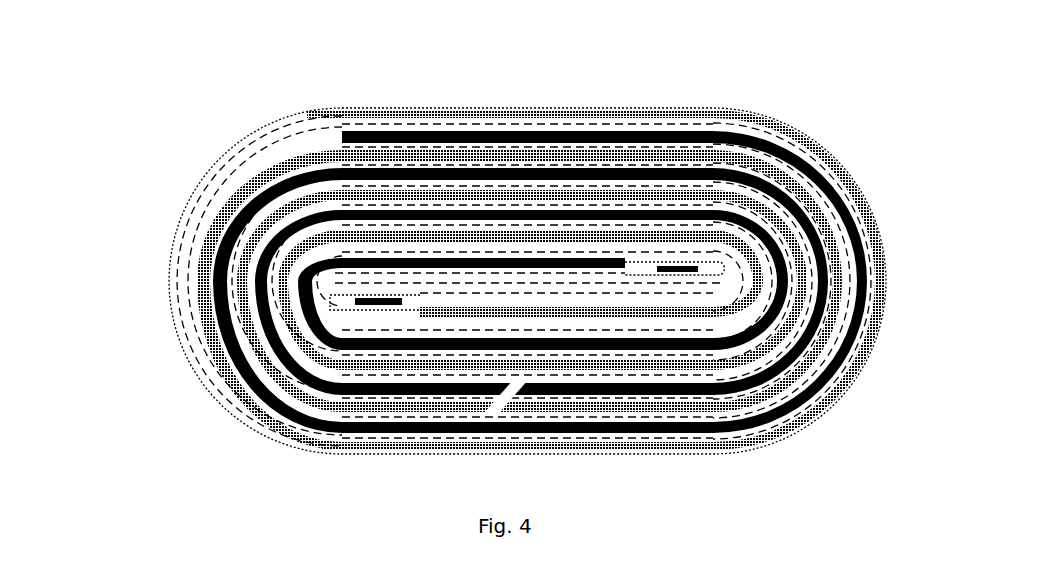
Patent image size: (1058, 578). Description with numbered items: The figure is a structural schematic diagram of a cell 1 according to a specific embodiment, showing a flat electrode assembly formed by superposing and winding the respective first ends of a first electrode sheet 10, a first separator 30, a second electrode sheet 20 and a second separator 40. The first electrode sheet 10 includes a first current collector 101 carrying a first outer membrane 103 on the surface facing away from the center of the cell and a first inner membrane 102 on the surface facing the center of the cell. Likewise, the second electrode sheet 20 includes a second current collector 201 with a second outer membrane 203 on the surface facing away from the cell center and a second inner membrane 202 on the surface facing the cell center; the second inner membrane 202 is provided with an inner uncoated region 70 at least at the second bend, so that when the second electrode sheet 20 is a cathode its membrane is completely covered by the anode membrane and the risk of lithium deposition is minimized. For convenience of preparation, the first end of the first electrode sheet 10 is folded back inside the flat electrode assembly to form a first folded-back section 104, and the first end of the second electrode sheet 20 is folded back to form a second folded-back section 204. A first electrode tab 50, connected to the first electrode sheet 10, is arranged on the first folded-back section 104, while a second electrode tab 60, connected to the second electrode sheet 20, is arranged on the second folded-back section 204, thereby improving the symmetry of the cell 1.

The cell 1 is at (158, 256).
The first electrode sheet 10 is at (558, 228).
The first current collector 101 is at (600, 250).
The first inner membrane 102 is at (650, 235).
The first outer membrane 103 is at (545, 266).
The first folded-back section 104 is at (645, 275).
The second electrode sheet 20 is at (207, 244).
The second current collector 201 is at (308, 182).
The second inner membrane 202 is at (272, 170).
The second outer membrane 203 is at (342, 180).
The second folded-back section 204 is at (330, 305).
The first separator 30 is at (735, 268).
The second separator 40 is at (702, 318).
The first electrode tab 50 is at (692, 268).
The second electrode tab 60 is at (362, 301).
The inner uncoated region 70 is at (800, 290).